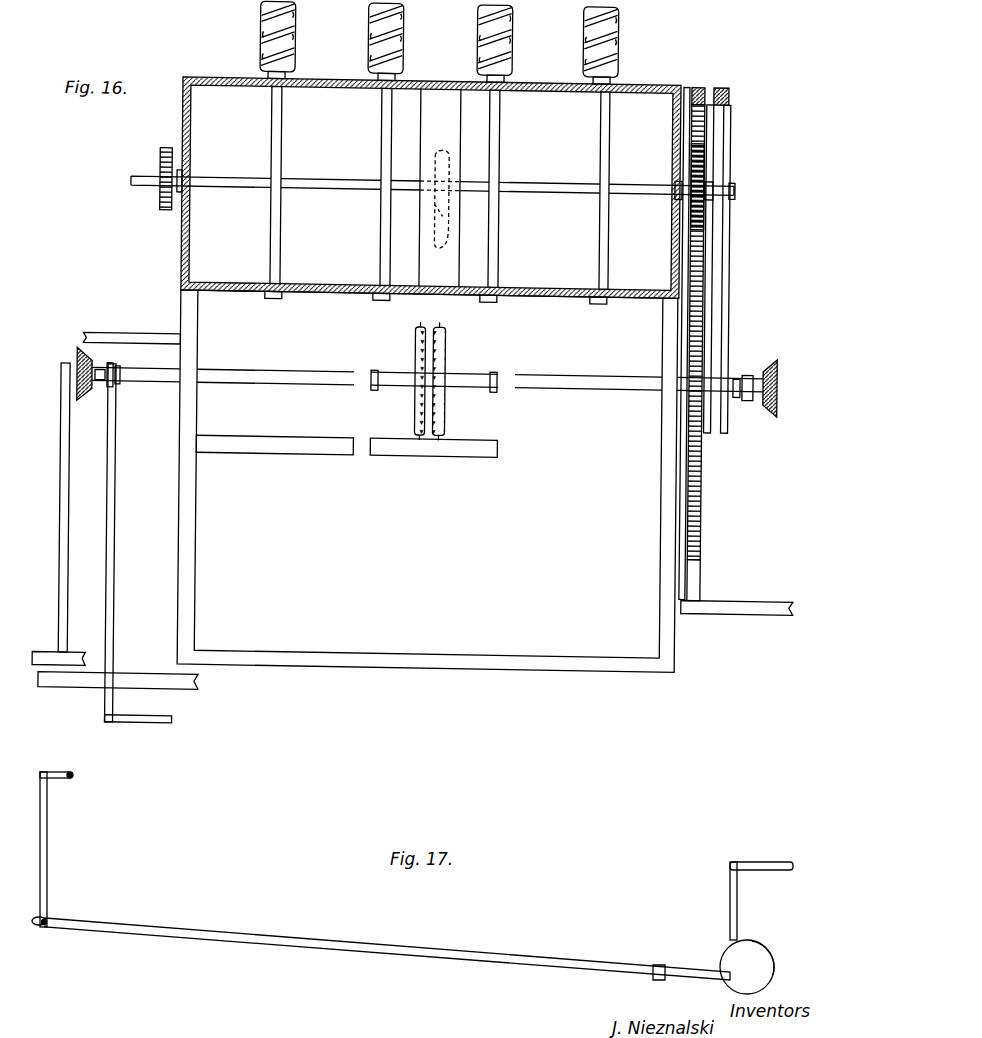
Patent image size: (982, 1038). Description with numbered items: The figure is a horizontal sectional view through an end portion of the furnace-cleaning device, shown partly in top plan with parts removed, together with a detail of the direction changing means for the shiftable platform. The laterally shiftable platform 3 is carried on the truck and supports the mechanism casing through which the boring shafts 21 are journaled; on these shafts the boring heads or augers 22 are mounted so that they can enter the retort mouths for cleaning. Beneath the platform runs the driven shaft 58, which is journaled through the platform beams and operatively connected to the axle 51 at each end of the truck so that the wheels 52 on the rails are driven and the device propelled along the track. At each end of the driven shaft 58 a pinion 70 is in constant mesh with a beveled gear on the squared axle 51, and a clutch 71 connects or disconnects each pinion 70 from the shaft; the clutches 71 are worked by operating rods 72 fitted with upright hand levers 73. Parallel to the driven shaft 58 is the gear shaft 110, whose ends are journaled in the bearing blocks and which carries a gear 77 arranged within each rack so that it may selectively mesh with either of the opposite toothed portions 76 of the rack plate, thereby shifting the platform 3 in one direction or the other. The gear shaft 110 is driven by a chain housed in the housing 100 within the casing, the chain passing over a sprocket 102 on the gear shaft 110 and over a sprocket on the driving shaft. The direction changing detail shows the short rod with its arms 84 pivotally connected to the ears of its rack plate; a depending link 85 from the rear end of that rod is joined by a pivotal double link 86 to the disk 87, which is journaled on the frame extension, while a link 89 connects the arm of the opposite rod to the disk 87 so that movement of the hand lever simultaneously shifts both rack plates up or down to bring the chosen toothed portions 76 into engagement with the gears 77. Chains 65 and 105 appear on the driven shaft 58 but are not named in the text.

In FIG. 16, the laterally shiftable platform 3 is at (200, 582).
In FIG. 16, the boring shafts 21 is at (602, 231).
In FIG. 16, the boring heads or augers 22 is at (586, 31).
In FIG. 16, the axle 51 is at (64, 505).
In FIG. 16, the wheels 52 is at (48, 654).
In FIG. 16, the driven shaft 58 is at (580, 373).
In FIG. 16, the chain 65 is at (414, 407).
In FIG. 16, the pinion 70 is at (80, 358).
In FIG. 16, the clutch 71 is at (128, 387).
In FIG. 16, the operating rods 72 is at (120, 552).
In FIG. 16, the upright hand levers 73 is at (156, 723).
In FIG. 16, the toothed portions 76 is at (706, 511).
In FIG. 16, the gear 77 is at (161, 163).
In FIG. 17, the arms 84 is at (56, 772).
In FIG. 17, the depending link 85 is at (47, 853).
In FIG. 17, the pivotal double link 86 is at (763, 862).
In FIG. 17, the disk 87 is at (747, 967).
In FIG. 17, the link 89 is at (730, 903).
In FIG. 16, the housing 100 is at (434, 132).
In FIG. 16, the sprocket 102 is at (436, 241).
In FIG. 16, the chain 105 is at (448, 397).
In FIG. 16, the gear shaft 110 is at (316, 178).